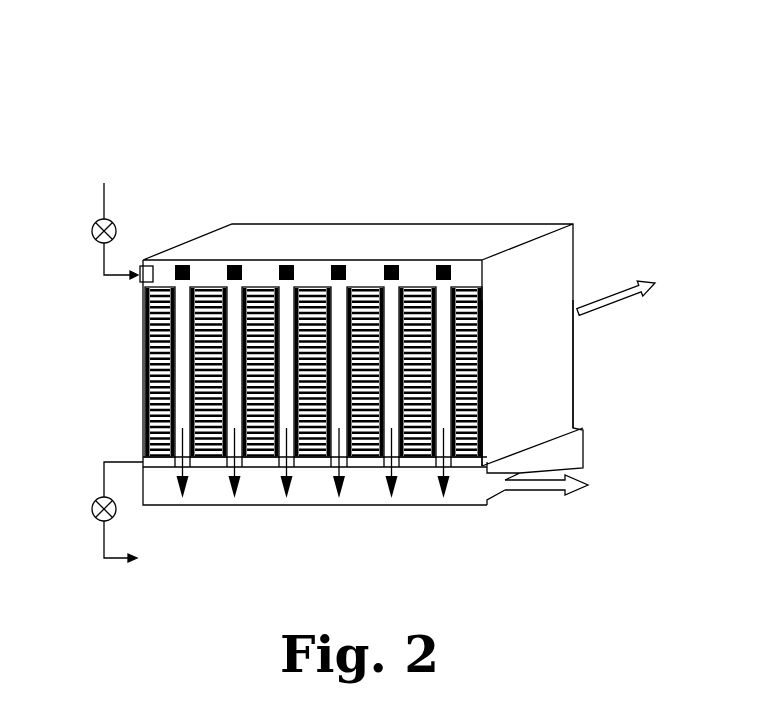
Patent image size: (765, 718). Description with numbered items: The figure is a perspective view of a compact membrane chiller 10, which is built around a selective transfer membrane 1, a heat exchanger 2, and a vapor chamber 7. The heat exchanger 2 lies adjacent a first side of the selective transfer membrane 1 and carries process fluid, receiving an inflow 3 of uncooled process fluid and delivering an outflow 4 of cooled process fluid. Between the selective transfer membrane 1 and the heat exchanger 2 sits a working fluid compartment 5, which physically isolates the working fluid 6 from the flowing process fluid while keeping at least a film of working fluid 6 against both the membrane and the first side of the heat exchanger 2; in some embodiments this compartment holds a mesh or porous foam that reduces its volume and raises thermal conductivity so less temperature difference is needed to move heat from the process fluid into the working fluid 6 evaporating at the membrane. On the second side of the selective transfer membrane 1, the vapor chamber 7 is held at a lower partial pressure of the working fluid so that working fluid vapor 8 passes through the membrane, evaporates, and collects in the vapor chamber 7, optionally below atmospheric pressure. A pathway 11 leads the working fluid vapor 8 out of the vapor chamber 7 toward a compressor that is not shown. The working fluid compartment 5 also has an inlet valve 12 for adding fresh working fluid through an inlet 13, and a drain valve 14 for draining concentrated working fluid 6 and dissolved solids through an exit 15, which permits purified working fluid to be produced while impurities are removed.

The selective transfer membrane 1 is at (223, 286).
The heat exchanger 2 is at (482, 378).
The inflow 3 is at (414, 456).
The outflow 4 is at (625, 294).
The working fluid compartment 5 is at (249, 292).
The working fluid 6 is at (267, 292).
The vapor chamber 7 is at (203, 482).
The working fluid vapor 8 is at (384, 470).
The compact membrane chiller 10 is at (191, 73).
The pathway 11 is at (562, 488).
The inlet valve 12 is at (92, 231).
The inlet 13 is at (108, 188).
The drain valve 14 is at (92, 509).
The exit 15 is at (135, 547).